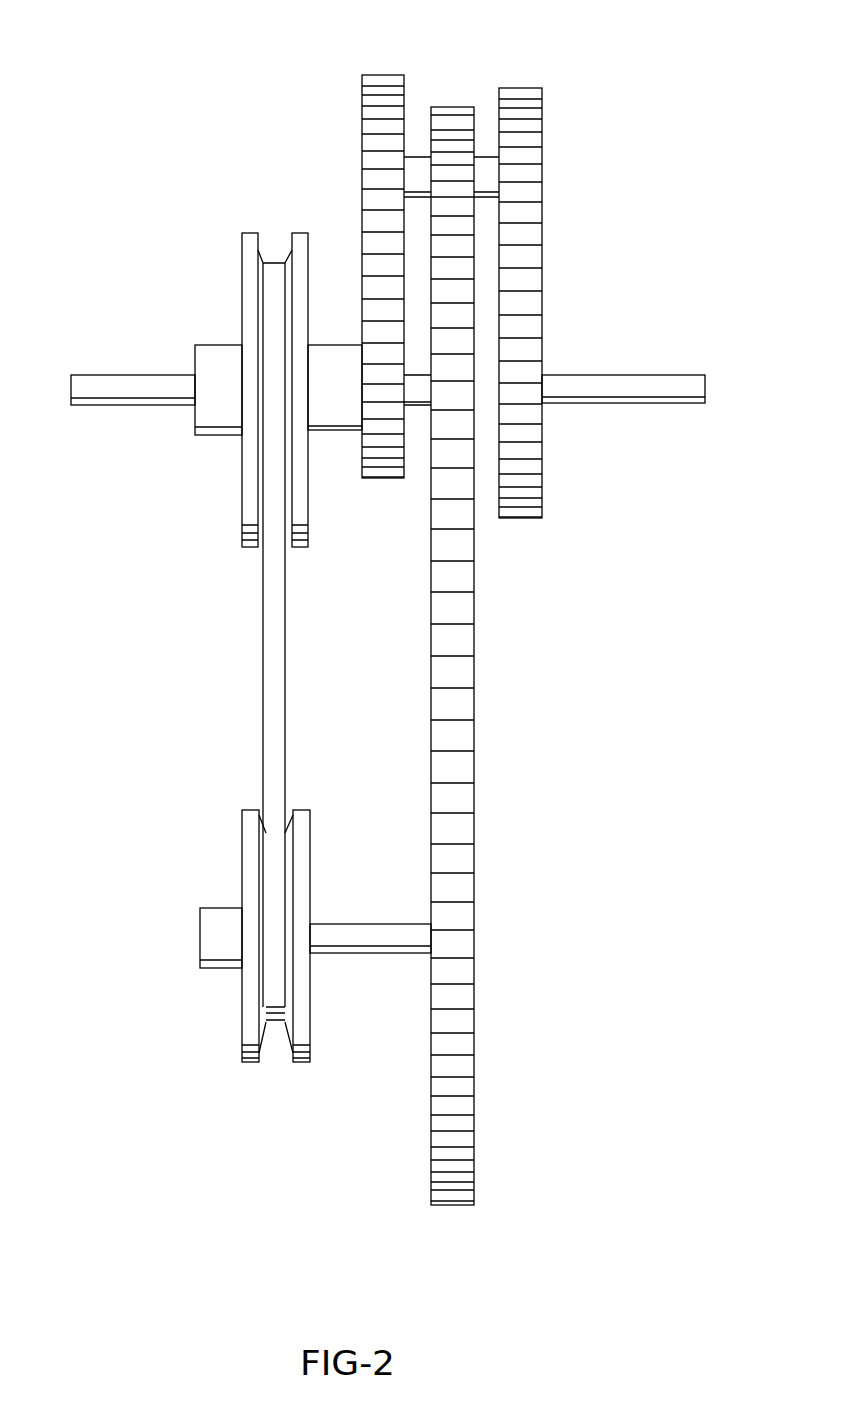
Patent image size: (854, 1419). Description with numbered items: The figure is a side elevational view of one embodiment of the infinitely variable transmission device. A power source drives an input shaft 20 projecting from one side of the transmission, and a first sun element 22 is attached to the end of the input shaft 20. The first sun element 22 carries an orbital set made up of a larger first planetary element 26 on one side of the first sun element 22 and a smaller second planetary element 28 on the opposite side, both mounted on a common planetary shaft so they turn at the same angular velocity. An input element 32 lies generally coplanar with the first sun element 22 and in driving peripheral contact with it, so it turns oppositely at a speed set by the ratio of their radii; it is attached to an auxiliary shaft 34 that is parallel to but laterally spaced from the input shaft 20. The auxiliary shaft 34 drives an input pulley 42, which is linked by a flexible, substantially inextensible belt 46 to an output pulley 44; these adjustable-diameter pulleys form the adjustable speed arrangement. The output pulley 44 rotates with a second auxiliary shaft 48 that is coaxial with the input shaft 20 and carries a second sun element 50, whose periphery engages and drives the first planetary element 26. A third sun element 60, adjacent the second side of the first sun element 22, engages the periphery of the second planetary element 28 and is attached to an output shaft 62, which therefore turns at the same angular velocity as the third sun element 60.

The input shaft 20 is at (120, 388).
The first sun element 22 is at (465, 550).
The first planetary element 26 is at (400, 78).
The second planetary element 28 is at (528, 163).
The input element 32 is at (462, 850).
The auxiliary shaft 34 is at (352, 942).
The input pulley 42 is at (253, 993).
The output pulley 44 is at (250, 307).
The belt 46 is at (273, 660).
The second auxiliary shaft 48 is at (335, 370).
The second sun element 50 is at (382, 432).
The third sun element 60 is at (530, 327).
The output shaft 62 is at (680, 382).